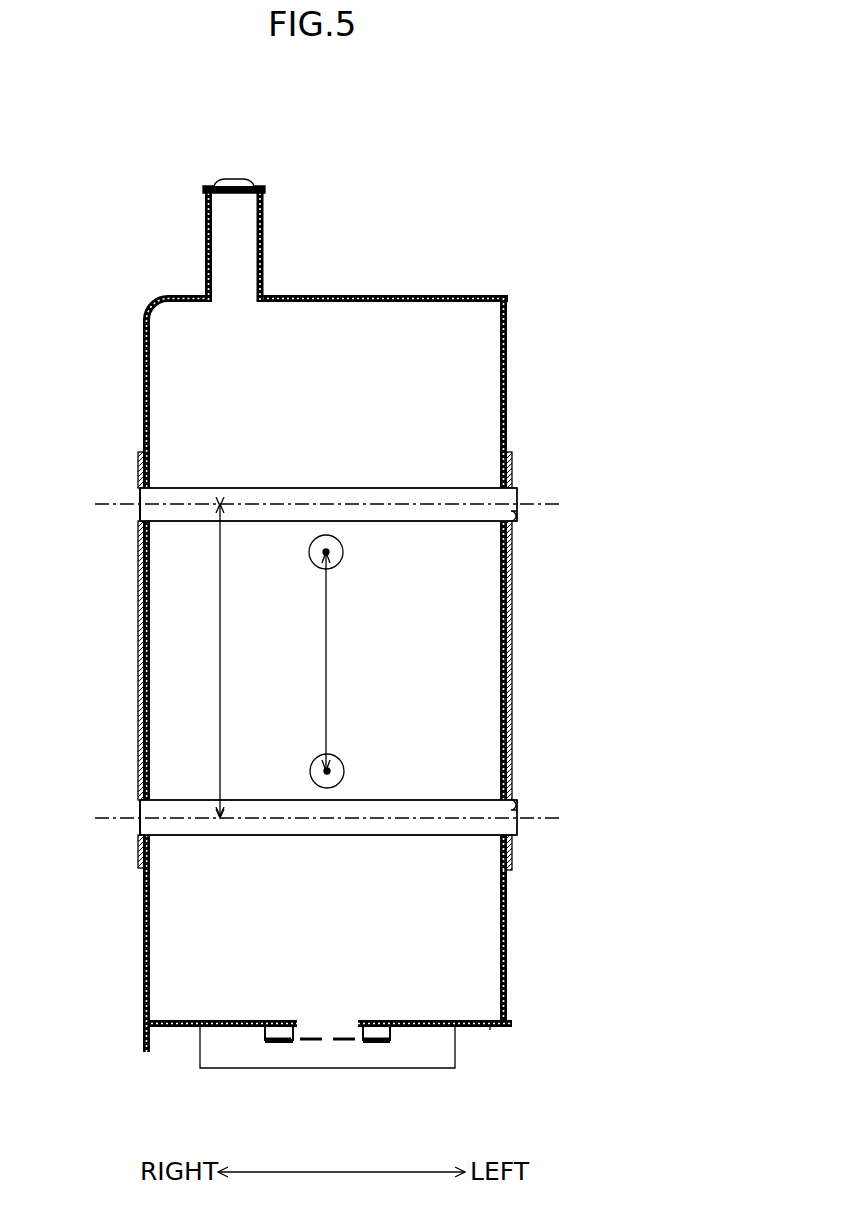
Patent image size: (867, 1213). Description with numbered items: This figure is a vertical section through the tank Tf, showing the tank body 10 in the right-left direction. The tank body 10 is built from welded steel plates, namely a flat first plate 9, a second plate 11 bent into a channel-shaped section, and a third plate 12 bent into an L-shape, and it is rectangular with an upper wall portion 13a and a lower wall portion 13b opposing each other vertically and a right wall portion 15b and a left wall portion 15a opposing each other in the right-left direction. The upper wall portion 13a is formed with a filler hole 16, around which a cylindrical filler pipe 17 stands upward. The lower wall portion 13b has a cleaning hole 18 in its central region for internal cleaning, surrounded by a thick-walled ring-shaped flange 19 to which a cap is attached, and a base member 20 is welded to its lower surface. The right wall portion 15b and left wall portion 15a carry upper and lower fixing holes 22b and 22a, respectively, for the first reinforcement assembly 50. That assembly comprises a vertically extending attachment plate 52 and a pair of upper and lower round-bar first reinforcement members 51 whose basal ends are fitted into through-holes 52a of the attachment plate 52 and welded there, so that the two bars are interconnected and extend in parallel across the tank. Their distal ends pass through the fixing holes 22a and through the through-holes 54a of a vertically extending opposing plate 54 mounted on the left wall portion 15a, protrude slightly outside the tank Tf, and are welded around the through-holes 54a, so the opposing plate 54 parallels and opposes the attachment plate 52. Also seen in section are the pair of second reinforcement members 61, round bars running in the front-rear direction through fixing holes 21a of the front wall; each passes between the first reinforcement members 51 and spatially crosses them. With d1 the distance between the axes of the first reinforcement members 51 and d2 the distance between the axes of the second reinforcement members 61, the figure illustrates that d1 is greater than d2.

The tank Tf is at (122, 222).
The tank body 10 is at (328, 638).
The first plate 9 is at (507, 344).
The second plate 11 is at (490, 1027).
The third plate 12 is at (143, 348).
The upper wall portion 13a is at (402, 295).
The lower wall portion 13b is at (460, 1027).
The left wall portion 15a is at (508, 938).
The right wall portion 15b is at (143, 940).
The filler hole 16 is at (263, 296).
The filler pipe 17 is at (263, 218).
The cleaning hole 18 is at (352, 1020).
The flange 19 is at (390, 1036).
The base member 20 is at (255, 1070).
The fixing hole 21a is at (330, 560).
The fixing hole 22a is at (500, 488).
The fixing hole 22b is at (150, 487).
The first reinforcement assembly 50 is at (301, 661).
The first reinforcement member 51 is at (138, 525).
The attachment plate 52 is at (138, 657).
The through-hole 52a is at (140, 494).
The opposing plate 54 is at (512, 630).
The through-hole 54a is at (513, 519).
The second reinforcement member 61 is at (311, 553).
The distance between axes of first reinforcement members d1 is at (204, 661).
The distance between axes of second reinforcement members d2 is at (311, 661).